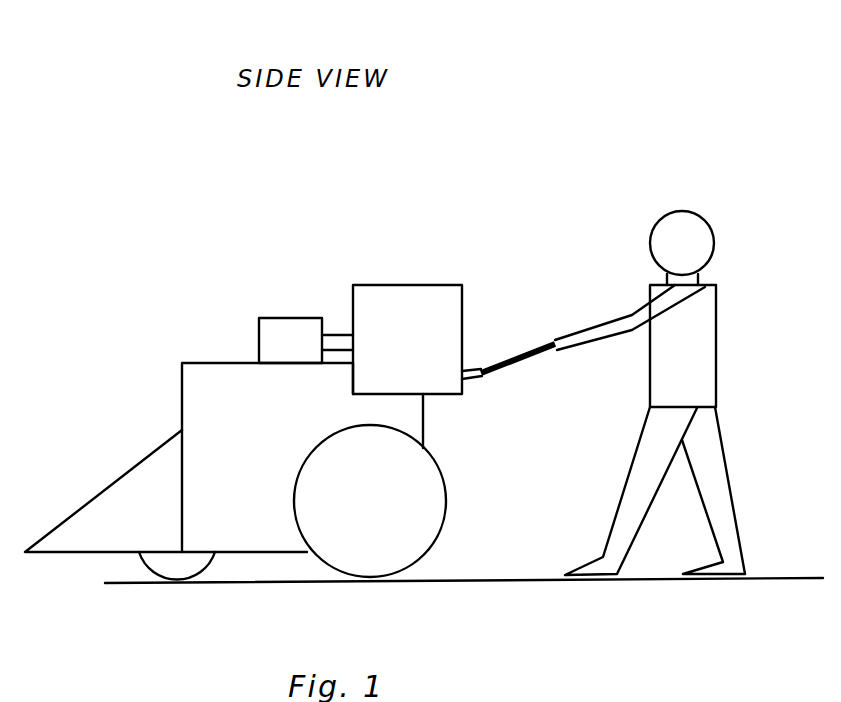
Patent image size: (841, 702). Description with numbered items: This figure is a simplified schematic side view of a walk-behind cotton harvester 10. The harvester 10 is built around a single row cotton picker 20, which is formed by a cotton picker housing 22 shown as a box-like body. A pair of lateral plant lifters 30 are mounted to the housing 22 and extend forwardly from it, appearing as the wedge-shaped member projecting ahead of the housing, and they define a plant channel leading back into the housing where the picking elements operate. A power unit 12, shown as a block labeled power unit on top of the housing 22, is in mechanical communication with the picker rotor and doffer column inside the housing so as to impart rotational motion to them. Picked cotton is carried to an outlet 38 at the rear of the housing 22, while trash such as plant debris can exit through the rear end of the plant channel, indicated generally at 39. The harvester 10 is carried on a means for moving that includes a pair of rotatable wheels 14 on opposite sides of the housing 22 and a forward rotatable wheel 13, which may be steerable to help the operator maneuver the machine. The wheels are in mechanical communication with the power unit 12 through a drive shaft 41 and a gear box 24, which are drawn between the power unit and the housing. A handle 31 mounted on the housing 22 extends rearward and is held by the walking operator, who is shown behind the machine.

The walk-behind cotton harvester 10 is at (403, 255).
The power unit 12 is at (461, 285).
The forward rotatable wheel 13 is at (190, 580).
The rotatable wheels 14 is at (398, 578).
The single row cotton picker 20 is at (137, 332).
The cotton picker housing 22 is at (208, 383).
The gear box 24 is at (292, 333).
The lateral plant lifters 30 is at (82, 535).
The handle 31 is at (525, 358).
The outlet 38 is at (427, 430).
The rear end of plant channel 39 is at (455, 515).
The drive shaft 41 is at (340, 335).